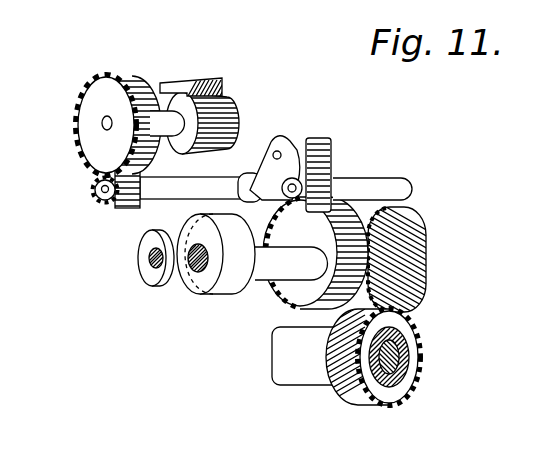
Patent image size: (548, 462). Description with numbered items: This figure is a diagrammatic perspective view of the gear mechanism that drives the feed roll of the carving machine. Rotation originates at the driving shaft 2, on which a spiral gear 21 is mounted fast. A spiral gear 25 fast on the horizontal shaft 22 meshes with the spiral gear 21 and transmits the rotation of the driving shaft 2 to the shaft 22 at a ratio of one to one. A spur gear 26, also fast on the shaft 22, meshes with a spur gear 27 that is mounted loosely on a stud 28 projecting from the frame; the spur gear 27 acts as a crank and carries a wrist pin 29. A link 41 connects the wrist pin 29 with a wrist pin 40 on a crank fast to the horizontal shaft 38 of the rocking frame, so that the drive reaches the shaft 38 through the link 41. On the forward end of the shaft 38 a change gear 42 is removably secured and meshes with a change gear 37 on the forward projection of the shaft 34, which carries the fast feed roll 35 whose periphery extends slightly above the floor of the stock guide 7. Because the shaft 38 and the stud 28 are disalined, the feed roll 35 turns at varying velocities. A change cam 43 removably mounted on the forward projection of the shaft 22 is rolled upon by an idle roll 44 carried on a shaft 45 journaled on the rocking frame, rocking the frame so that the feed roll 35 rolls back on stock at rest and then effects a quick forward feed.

The driving shaft 2 is at (290, 370).
The stock guide 7 is at (181, 85).
The spiral gear 21 is at (392, 397).
The horizontal shaft 22 is at (273, 263).
The spiral gear 25 is at (418, 254).
The spur gear 26 is at (327, 280).
The spur gear 27 is at (295, 147).
The stud 28 is at (363, 190).
The wrist pin 29 is at (326, 163).
The horizontal shaft 34 is at (104, 129).
The feed roll 35 is at (212, 118).
The change gear 37 is at (99, 125).
The horizontal shaft 38 is at (89, 200).
The wrist pin 40 is at (252, 175).
The link 41 is at (298, 186).
The change gear 42 is at (96, 188).
The change cam 43 is at (233, 280).
The idle roll 44 is at (136, 268).
The shaft 45 is at (150, 258).